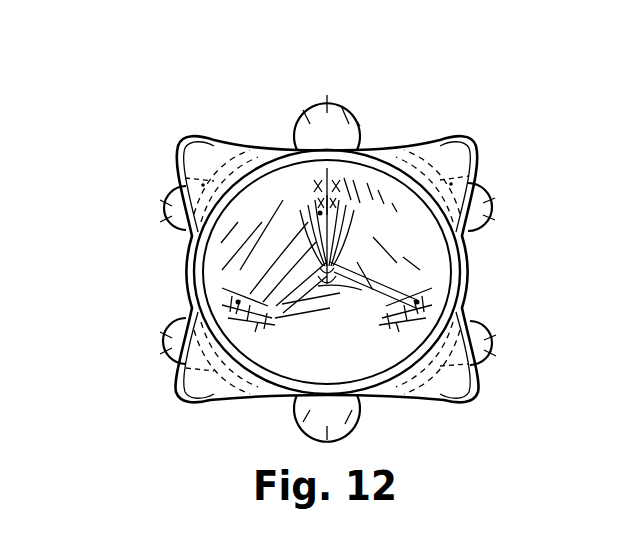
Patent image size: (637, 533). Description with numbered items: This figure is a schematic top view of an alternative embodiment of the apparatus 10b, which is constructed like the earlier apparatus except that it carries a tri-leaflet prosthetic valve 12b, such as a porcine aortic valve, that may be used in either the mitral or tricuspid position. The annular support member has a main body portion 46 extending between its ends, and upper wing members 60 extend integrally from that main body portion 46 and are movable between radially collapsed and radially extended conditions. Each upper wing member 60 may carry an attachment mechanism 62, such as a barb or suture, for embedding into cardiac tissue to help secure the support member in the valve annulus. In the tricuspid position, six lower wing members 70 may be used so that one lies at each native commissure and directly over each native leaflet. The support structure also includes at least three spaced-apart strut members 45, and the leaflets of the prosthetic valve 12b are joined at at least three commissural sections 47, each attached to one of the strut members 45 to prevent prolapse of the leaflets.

The apparatus 10b is at (108, 97).
The attachment mechanism 62 is at (288, 88).
The lower wing members 70 is at (340, 118).
The upper wing members 60 is at (218, 140).
The main body portion 46 is at (462, 272).
The tri-leaflet prosthetic valve 12b is at (450, 274).
The commissural sections 47 is at (348, 229).
The strut members 45 is at (275, 240).